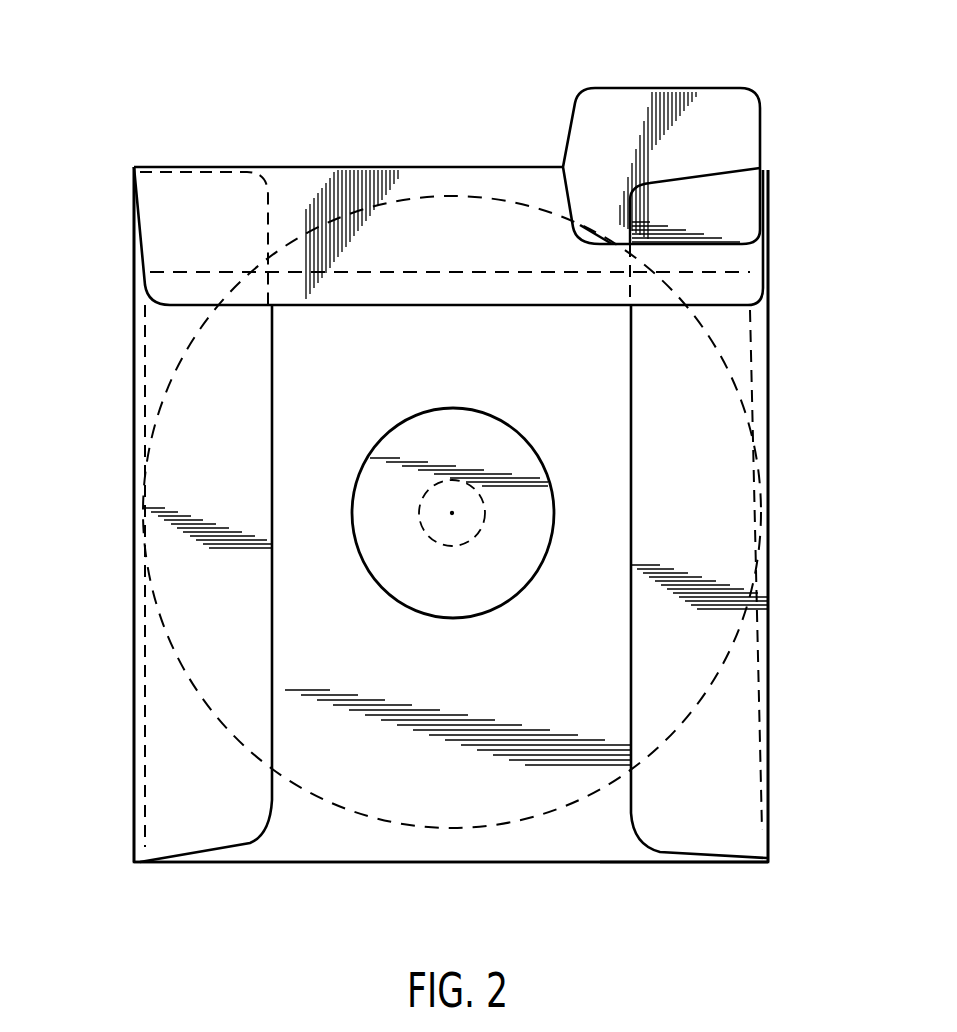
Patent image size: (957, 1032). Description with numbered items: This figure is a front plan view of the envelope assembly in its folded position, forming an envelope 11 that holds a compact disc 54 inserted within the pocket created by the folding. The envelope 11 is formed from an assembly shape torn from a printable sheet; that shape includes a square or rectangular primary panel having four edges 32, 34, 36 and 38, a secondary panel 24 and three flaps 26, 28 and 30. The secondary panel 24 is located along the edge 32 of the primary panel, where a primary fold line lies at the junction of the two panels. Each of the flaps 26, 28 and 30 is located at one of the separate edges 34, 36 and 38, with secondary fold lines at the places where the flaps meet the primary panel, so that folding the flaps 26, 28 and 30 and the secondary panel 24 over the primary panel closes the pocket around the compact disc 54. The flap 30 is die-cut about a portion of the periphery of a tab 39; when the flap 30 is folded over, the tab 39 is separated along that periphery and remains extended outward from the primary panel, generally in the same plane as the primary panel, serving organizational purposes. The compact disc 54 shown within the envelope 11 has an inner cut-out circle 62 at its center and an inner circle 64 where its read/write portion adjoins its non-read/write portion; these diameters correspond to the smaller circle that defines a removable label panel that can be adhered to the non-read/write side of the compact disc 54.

The envelope 11 is at (470, 95).
The secondary panel 24 is at (605, 845).
The flap 26 is at (160, 800).
The flap 28 is at (750, 740).
The flap 30 is at (703, 190).
The edge 32 is at (322, 863).
The edge 34 is at (137, 702).
The edge 36 is at (296, 167).
The edge 38 is at (770, 647).
The tab 39 is at (597, 100).
The compact disc 54 is at (620, 410).
The inner cut-out circle 62 is at (485, 517).
The inner circle 64 is at (522, 590).